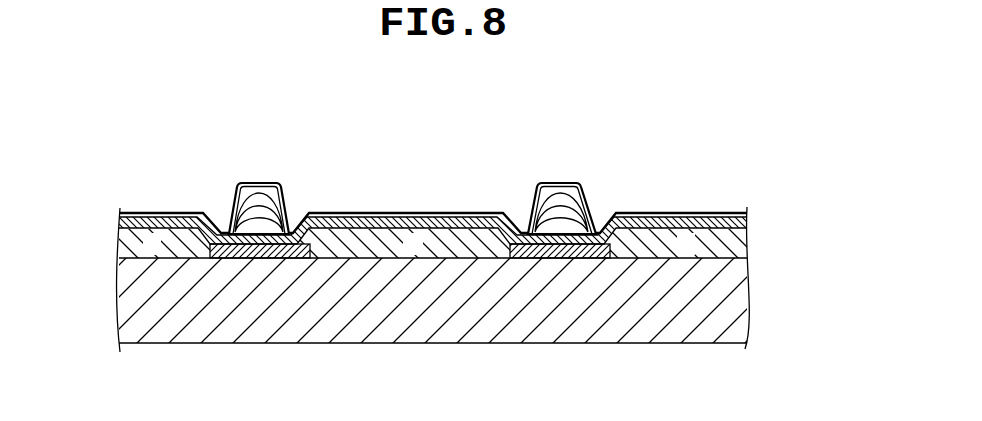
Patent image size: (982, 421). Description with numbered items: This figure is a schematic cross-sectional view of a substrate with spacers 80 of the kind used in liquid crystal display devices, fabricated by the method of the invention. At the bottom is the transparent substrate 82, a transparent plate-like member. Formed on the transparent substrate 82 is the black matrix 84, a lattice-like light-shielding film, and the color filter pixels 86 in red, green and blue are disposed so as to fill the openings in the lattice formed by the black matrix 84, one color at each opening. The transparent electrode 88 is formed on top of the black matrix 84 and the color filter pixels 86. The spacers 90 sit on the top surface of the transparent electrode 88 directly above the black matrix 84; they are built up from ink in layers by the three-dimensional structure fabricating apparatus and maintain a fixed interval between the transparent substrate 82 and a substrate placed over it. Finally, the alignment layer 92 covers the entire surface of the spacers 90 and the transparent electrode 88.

The substrate with spacers 80 is at (420, 244).
The transparent substrate 82 is at (405, 336).
The black matrix 84 is at (561, 254).
The color filter pixels 86 is at (714, 242).
The transparent electrode 88 is at (657, 219).
The spacers 90 is at (555, 193).
The alignment layer 92 is at (417, 212).